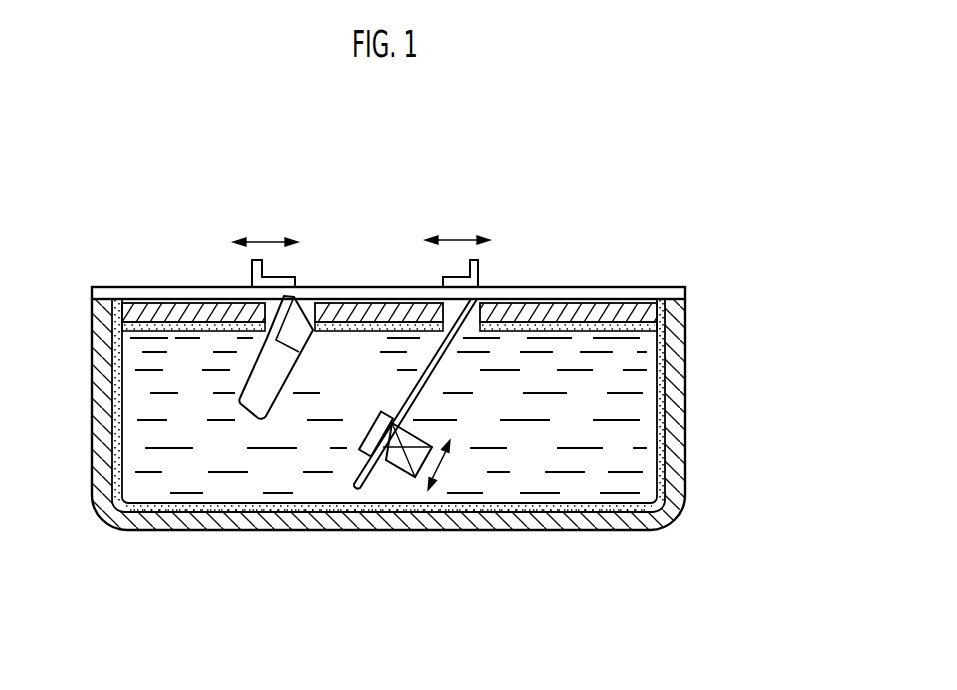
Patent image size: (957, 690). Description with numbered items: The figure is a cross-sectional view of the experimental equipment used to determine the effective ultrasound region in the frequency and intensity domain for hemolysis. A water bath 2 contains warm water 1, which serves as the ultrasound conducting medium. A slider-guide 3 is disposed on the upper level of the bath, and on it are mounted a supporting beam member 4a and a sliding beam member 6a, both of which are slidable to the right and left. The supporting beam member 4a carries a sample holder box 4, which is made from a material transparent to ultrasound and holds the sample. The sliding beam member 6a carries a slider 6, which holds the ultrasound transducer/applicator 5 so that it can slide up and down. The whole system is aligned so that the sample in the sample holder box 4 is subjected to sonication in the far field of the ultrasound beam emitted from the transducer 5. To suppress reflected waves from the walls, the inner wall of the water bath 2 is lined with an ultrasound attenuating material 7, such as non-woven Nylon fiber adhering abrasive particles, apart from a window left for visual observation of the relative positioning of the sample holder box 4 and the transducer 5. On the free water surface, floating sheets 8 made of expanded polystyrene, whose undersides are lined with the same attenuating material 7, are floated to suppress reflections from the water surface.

The warm water 1 is at (620, 452).
The water bath 2 is at (685, 355).
The slider-guide 3 is at (600, 286).
The sample holder box 4 is at (253, 377).
The supporting beam member 4a is at (262, 275).
The ultrasound transducer/applicator 5 is at (396, 466).
The slider 6 is at (358, 463).
The sliding beam member 6a is at (483, 266).
The ultrasound attenuating material 7 is at (170, 333).
The floating sheets 8 is at (156, 304).